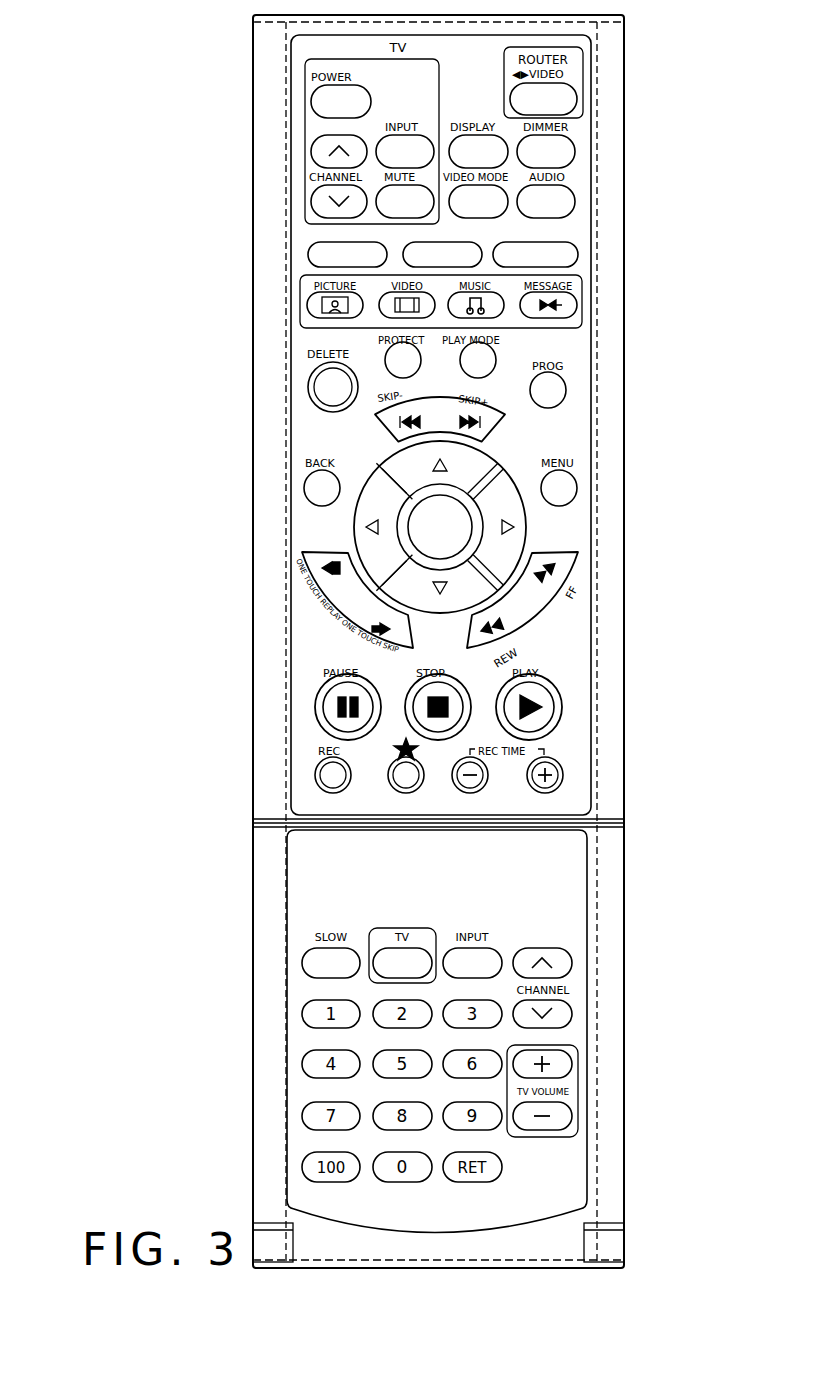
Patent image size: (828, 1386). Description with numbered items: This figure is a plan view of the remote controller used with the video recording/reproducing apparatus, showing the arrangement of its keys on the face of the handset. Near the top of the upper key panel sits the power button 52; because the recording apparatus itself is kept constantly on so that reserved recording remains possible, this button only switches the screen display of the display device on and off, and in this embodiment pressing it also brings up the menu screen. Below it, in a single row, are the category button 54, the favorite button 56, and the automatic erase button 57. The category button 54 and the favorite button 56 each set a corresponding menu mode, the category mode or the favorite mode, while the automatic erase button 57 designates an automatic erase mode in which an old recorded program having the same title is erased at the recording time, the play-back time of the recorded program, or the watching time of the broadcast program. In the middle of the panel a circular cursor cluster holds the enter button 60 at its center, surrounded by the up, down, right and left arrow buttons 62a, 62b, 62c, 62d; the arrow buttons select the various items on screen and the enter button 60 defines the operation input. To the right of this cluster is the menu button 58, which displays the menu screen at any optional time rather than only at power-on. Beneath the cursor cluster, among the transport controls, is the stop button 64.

The power button 52 is at (313, 103).
The category button 54 is at (308, 255).
The favorite button 56 is at (482, 246).
The automatic erase button 57 is at (578, 255).
The menu button 58 is at (577, 488).
The enter button 60 is at (460, 543).
The up arrow button 62a is at (457, 463).
The down arrow button 62b is at (517, 520).
The right arrow button 62c is at (455, 588).
The left arrow button 62d is at (375, 543).
The stop button 64 is at (447, 715).